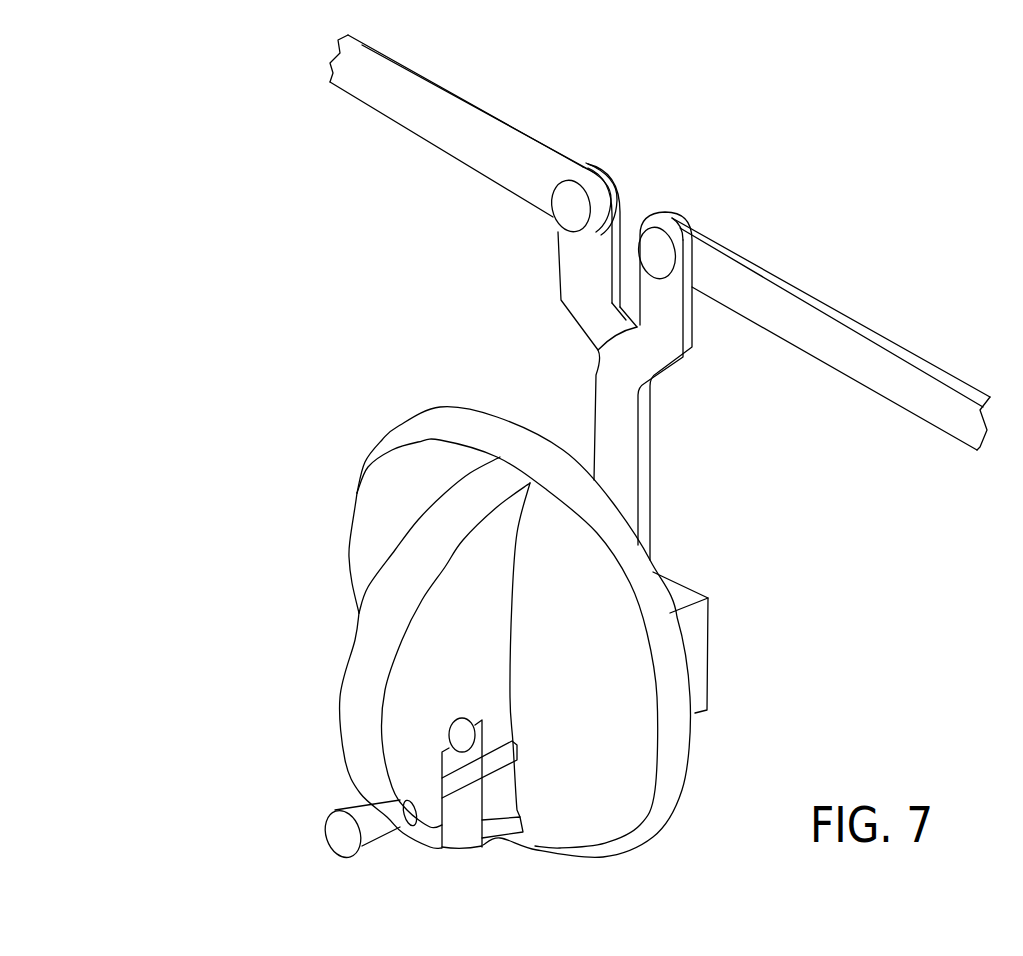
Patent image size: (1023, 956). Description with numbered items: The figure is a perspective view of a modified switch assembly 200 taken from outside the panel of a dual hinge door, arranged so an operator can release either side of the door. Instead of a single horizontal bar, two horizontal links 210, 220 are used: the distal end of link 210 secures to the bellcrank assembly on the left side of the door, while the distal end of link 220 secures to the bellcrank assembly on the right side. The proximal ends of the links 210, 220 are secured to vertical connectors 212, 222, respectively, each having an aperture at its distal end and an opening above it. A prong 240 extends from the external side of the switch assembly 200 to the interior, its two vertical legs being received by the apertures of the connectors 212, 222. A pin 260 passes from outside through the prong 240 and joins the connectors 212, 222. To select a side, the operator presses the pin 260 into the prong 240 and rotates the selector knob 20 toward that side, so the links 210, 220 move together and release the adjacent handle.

The modified switch assembly 200 is at (211, 617).
The selector knob 20 is at (403, 720).
The horizontal link 210 is at (382, 92).
The vertical connector 212 is at (586, 260).
The horizontal link 220 is at (918, 378).
The vertical connector 222 is at (667, 350).
The prong 240 is at (472, 803).
The pin 260 is at (368, 832).